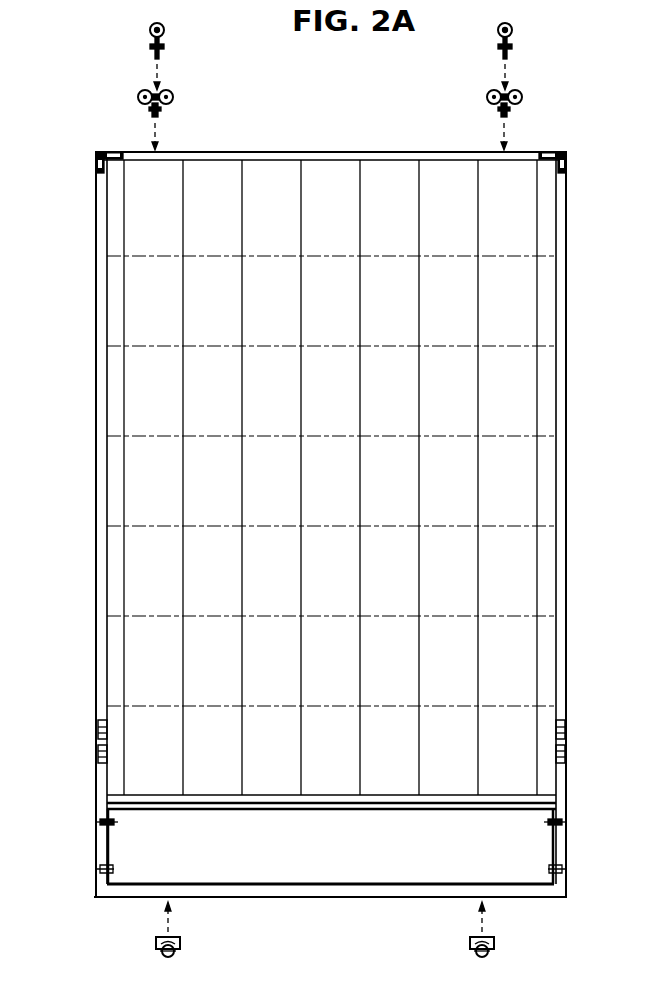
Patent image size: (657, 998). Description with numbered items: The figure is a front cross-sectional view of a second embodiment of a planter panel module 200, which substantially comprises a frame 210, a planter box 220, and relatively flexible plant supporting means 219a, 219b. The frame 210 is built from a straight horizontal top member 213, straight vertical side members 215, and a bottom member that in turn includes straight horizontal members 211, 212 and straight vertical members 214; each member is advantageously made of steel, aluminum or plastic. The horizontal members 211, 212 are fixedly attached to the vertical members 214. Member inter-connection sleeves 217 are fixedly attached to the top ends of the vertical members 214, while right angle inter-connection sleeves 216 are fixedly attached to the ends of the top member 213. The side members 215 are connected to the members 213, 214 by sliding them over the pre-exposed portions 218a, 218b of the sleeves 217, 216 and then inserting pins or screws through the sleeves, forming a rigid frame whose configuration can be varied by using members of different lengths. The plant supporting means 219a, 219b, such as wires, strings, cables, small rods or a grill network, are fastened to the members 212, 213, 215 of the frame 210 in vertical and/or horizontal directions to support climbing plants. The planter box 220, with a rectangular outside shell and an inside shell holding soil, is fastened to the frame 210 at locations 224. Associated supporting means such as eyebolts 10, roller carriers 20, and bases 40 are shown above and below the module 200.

The eyebolt 10 is at (164, 46).
The roller carrier 20 is at (173, 96).
The base 40 is at (172, 955).
The planter panel module 200 is at (334, 449).
The frame 210 is at (433, 122).
The straight horizontal member 211 is at (294, 890).
The straight horizontal member 212 is at (313, 795).
The straight horizontal top member 213 is at (391, 152).
The straight vertical member 214 is at (99, 845).
The straight vertical side member 215 is at (96, 326).
The right angle inter-connection sleeve 216 is at (100, 152).
The member inter-connection sleeve 217 is at (100, 756).
The pre-exposed portion of sleeve 218a is at (100, 730).
The pre-exposed portion of sleeve 218b is at (100, 168).
The relatively flexible plant supporting means 219a is at (183, 300).
The relatively flexible plant supporting means 219b is at (509, 255).
The planter box 220 is at (548, 858).
The fastening location 224 is at (100, 822).